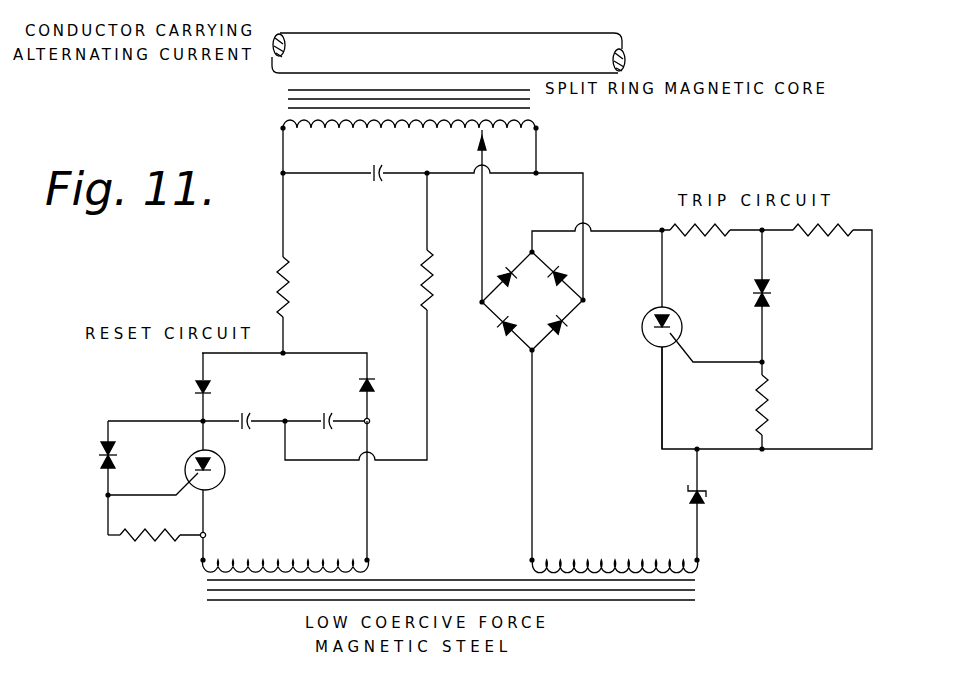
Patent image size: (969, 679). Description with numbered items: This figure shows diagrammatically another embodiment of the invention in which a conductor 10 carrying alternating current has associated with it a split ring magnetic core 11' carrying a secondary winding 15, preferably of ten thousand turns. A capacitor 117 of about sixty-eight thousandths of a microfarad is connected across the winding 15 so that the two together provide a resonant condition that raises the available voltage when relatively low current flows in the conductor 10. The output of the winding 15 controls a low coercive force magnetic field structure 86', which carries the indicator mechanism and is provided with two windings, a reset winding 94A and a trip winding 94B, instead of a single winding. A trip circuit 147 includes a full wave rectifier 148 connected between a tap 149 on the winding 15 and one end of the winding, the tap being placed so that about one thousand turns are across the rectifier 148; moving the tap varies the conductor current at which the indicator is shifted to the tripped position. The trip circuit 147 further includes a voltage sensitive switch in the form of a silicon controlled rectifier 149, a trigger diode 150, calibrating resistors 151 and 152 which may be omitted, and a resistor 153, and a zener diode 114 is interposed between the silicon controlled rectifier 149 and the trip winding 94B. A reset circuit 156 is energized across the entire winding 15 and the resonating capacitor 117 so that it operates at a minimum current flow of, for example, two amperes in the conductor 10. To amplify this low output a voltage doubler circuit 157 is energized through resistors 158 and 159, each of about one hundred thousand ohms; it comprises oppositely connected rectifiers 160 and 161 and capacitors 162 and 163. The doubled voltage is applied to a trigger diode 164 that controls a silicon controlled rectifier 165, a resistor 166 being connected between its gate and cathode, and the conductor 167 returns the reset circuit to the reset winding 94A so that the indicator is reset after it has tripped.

The conductor 10 is at (415, 42).
The magnetic core 11' is at (452, 109).
The winding 15 is at (363, 136).
The capacitor 117 is at (377, 183).
The silicon controlled rectifier 149 is at (476, 140).
The full wave rectifier 148 is at (517, 341).
The trip circuit 147 is at (747, 155).
The calibrating resistor 151 is at (716, 236).
The calibrating resistor 152 is at (848, 227).
The trigger diode 150 is at (772, 290).
The resistor 153 is at (770, 392).
The zener diode 114 is at (705, 495).
The trip winding 94B is at (612, 553).
The magnetic field structure 86' is at (430, 614).
The reset circuit 156 is at (247, 319).
The voltage doubler circuit 157 is at (331, 349).
The resistor 158 is at (295, 279).
The resistor 159 is at (423, 290).
The rectifier 160 is at (194, 386).
The rectifier 161 is at (377, 384).
The capacitor 162 is at (245, 412).
The capacitor 163 is at (326, 412).
The trigger diode 164 is at (100, 453).
The silicon controlled rectifier 165 is at (222, 482).
The resistor 166 is at (150, 540).
The conductor 167 is at (370, 506).
The reset winding 94A is at (278, 557).